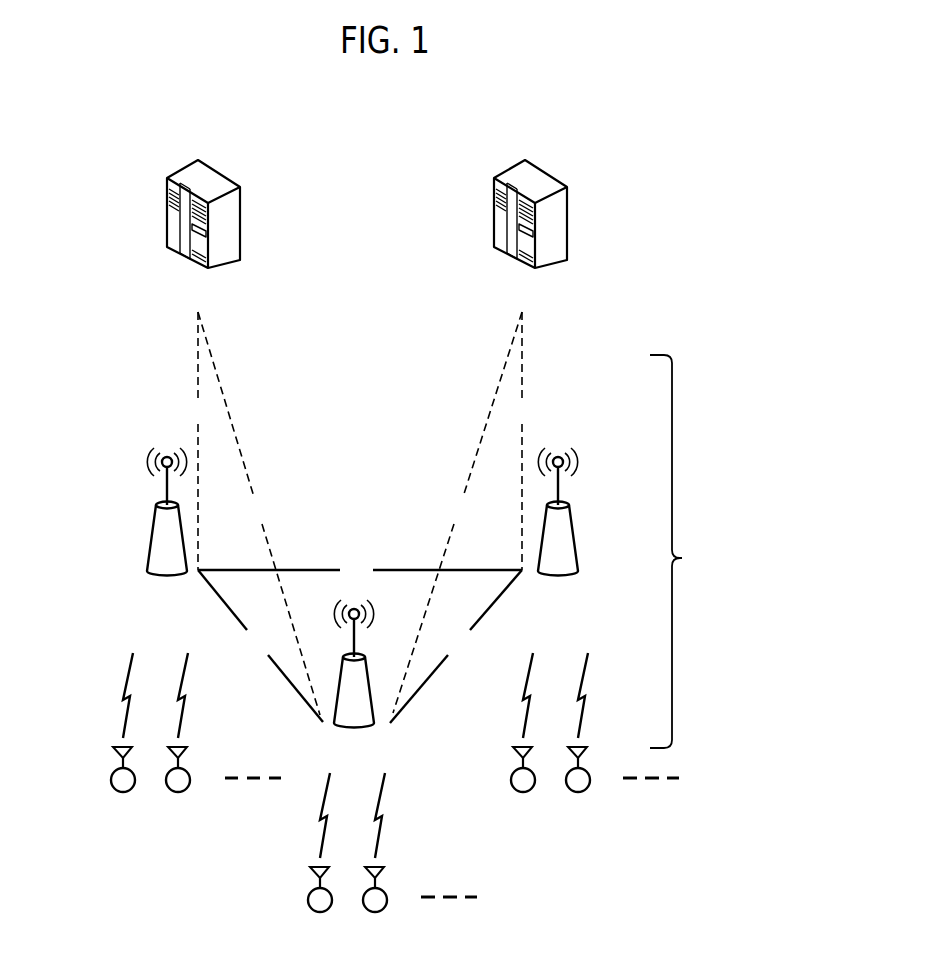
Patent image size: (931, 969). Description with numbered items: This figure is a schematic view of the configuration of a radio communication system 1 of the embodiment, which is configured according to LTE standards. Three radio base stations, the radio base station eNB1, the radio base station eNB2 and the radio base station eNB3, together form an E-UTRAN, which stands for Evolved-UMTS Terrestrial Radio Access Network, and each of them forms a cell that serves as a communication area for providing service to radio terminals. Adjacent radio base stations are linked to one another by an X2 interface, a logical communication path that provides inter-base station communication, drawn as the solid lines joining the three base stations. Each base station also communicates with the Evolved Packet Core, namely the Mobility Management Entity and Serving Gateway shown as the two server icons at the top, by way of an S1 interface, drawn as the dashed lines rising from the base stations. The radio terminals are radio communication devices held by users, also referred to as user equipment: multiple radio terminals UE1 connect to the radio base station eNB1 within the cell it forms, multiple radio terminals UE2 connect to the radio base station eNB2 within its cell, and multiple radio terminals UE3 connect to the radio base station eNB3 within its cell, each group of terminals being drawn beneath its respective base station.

The radio communication system 1 is at (612, 122).
The S1 interface S1 is at (358, 513).
The X2 interface X2 is at (360, 640).
The radio base station eNB1 is at (165, 529).
The radio base station eNB2 is at (558, 529).
The radio base station eNB3 is at (354, 681).
The radio terminal UE1 is at (192, 738).
The radio terminal UE2 is at (591, 738).
The radio terminal UE3 is at (389, 858).
The element E-UTRAN is at (716, 551).